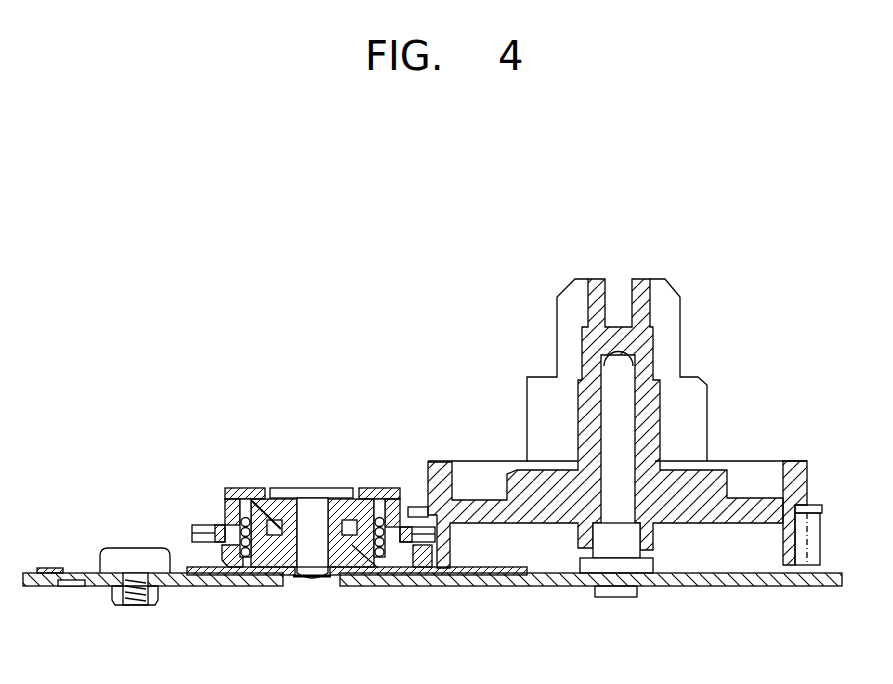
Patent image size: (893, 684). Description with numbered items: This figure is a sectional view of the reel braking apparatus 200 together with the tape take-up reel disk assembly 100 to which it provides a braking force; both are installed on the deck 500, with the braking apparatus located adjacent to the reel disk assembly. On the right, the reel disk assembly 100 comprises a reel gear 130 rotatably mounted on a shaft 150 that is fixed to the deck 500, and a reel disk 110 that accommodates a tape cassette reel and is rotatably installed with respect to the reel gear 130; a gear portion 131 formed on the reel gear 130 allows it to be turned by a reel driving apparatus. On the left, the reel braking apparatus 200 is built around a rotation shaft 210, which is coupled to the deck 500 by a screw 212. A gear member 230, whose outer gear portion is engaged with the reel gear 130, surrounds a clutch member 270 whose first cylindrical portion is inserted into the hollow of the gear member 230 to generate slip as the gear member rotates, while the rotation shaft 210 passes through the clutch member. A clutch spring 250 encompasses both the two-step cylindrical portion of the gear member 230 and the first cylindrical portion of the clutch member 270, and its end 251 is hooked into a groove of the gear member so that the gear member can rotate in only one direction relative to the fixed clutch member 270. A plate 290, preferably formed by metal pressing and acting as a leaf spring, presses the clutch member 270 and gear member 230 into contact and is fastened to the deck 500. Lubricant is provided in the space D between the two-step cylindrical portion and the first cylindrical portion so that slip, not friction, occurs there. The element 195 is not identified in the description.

The tape take-up reel disk assembly 100 is at (700, 283).
The reel disk 110 is at (698, 385).
The reel gear 130 is at (800, 460).
The gear portion 131 is at (815, 540).
The shaft 150 is at (613, 383).
The cap / cover 195 is at (108, 548).
The reel braking apparatus 200 is at (285, 455).
The rotation shaft 210 is at (320, 515).
The screw 212 is at (310, 580).
The gear member 230 is at (232, 490).
The clutch spring 250 is at (240, 527).
The end of the clutch spring 251 is at (383, 520).
The clutch member 270 is at (257, 573).
The plate 290 is at (45, 567).
The deck 500 is at (518, 586).
The space D is at (352, 545).